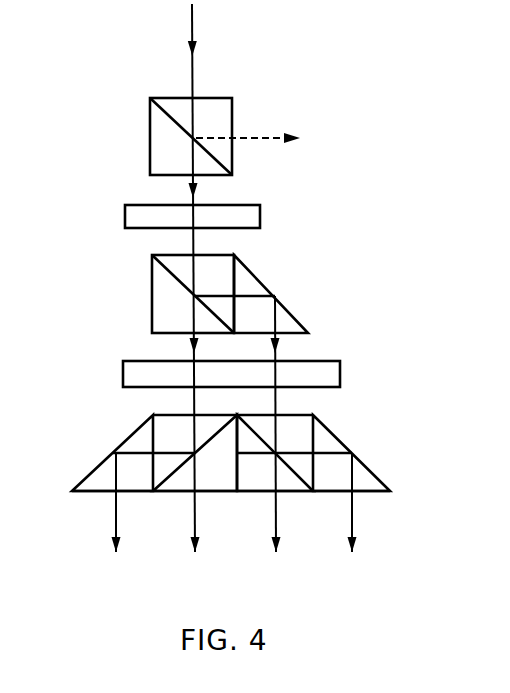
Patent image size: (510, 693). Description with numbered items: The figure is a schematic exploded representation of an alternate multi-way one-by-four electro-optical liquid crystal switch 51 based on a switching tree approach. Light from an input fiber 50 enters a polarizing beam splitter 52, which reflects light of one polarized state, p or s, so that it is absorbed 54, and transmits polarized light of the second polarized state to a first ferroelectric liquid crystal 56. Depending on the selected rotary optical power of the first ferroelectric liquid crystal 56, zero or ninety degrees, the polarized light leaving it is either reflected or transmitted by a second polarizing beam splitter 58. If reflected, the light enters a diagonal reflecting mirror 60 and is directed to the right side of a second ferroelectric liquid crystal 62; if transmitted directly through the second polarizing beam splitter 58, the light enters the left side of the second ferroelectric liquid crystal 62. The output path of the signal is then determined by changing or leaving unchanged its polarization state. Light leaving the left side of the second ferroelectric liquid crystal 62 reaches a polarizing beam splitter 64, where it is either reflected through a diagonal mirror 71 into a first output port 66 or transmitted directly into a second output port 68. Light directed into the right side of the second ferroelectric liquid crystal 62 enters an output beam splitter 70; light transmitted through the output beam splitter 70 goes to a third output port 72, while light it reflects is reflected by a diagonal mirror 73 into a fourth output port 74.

The input fiber 50 is at (193, 77).
The optical switching assembly 51 is at (409, 252).
The polarizing beam splitter 52 is at (230, 117).
The absorbed light 54 is at (259, 142).
The first ferroelectric liquid crystal 56 is at (246, 229).
The second polarizing beam splitter 58 is at (159, 301).
The diagonal reflecting mirror 60 is at (289, 312).
The second ferroelectric liquid crystal 62 is at (340, 361).
The polarizing beam splitter 64 is at (217, 483).
The first output port 66 is at (113, 523).
The second output port 68 is at (199, 522).
The output beam splitter 70 is at (290, 483).
The reflecting prism 71 is at (104, 462).
The third output port 72 is at (280, 522).
The diagonal mirror 73 is at (379, 471).
The fourth output port 74 is at (356, 522).